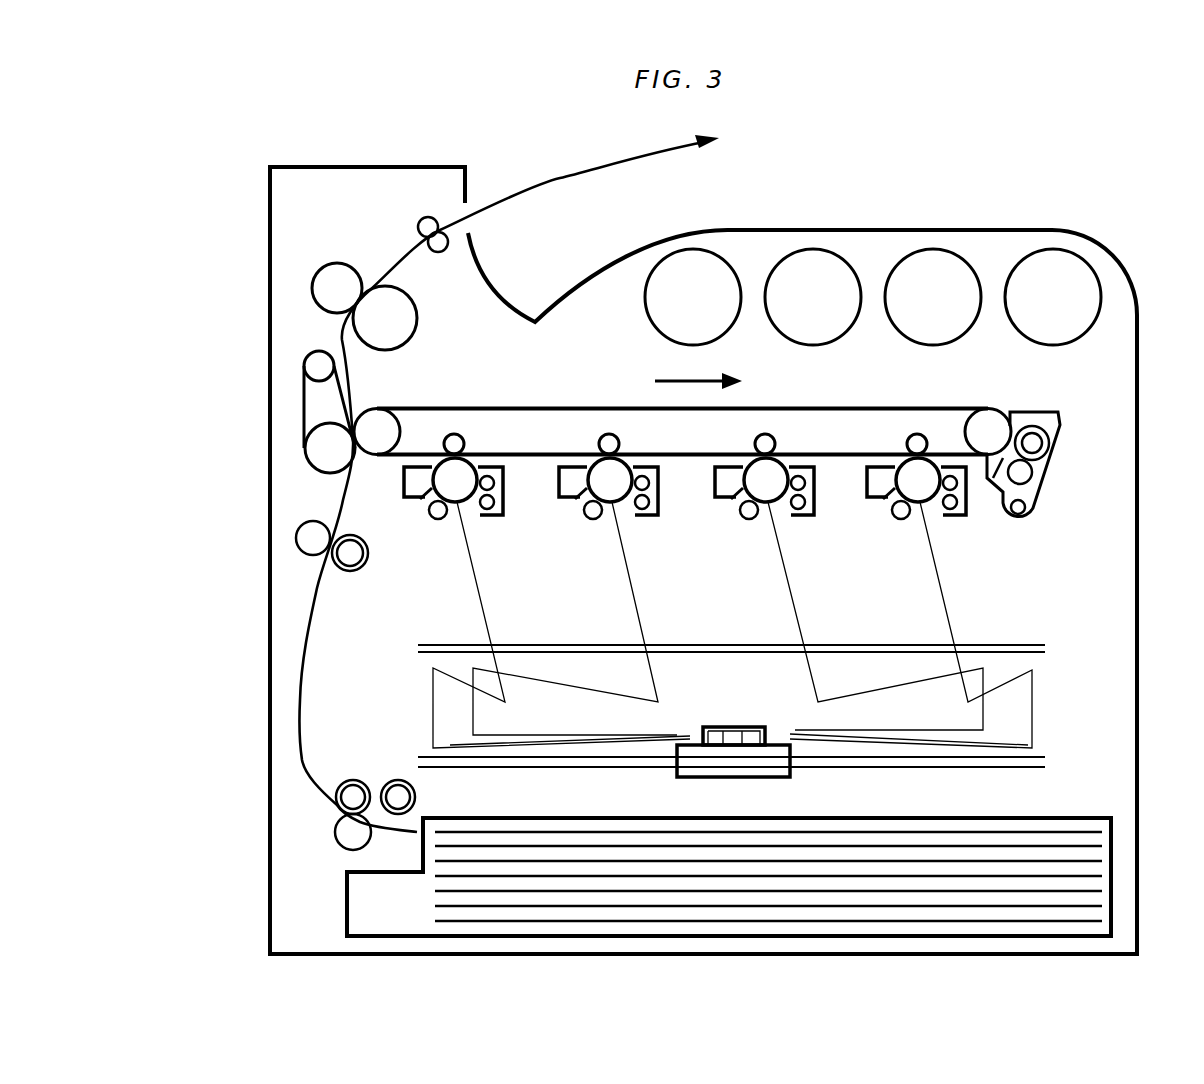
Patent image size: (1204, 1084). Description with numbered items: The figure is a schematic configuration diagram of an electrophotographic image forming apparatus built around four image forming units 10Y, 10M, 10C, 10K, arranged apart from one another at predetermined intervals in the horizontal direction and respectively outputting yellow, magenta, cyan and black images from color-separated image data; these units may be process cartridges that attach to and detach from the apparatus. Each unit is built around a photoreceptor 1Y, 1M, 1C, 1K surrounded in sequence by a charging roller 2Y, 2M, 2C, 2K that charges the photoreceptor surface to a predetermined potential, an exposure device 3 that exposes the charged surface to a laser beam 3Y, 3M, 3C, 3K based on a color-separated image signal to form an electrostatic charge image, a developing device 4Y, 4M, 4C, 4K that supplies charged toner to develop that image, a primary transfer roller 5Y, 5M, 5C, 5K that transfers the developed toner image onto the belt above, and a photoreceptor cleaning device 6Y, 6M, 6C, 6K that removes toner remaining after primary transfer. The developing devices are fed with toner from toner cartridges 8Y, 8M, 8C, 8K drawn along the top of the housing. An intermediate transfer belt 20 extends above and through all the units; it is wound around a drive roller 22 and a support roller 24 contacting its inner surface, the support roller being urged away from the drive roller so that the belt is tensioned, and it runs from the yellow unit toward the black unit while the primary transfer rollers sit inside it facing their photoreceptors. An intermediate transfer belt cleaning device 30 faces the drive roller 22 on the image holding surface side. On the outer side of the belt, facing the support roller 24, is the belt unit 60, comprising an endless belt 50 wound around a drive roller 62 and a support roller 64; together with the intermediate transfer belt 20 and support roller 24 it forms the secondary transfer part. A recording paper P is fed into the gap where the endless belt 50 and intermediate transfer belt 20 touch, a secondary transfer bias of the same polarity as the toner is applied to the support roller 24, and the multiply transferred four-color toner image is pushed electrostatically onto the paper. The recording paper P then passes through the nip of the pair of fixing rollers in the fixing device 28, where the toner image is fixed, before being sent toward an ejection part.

The fixing device 28 is at (400, 289).
The belt unit 60 is at (258, 412).
The support roller 64 is at (312, 365).
The endless belt 50 is at (304, 405).
The drive roller 62 is at (315, 455).
The support roller 24 is at (378, 422).
The intermediate transfer belt 20 is at (845, 407).
The drive roller 22 is at (988, 410).
The intermediate transfer belt cleaning device 30 is at (1060, 422).
The toner cartridge 8K is at (692, 272).
The toner cartridge 8C is at (812, 272).
The toner cartridge 8M is at (932, 272).
The toner cartridge 8Y is at (1052, 272).
The primary transfer roller 5K is at (463, 441).
The primary transfer roller 5C is at (618, 441).
The primary transfer roller 5M is at (774, 441).
The primary transfer roller 5Y is at (925, 440).
The image forming unit 10K is at (462, 550).
The image forming unit 10C is at (617, 550).
The image forming unit 10M is at (773, 550).
The image forming unit 10Y is at (925, 550).
The photoreceptor 1K is at (470, 501).
The photoreceptor 1C is at (625, 501).
The photoreceptor 1M is at (781, 501).
The photoreceptor 1Y is at (933, 501).
The charging roller 2K is at (443, 534).
The charging roller 2C is at (597, 534).
The charging roller 2M is at (753, 534).
The charging roller 2Y is at (906, 534).
The developing device 4K is at (498, 516).
The developing device 4C is at (653, 516).
The developing device 4M is at (809, 516).
The developing device 4Y is at (961, 516).
The photoreceptor cleaning device 6K is at (404, 489).
The photoreceptor cleaning device 6C is at (559, 489).
The photoreceptor cleaning device 6M is at (715, 489).
The photoreceptor cleaning device 6Y is at (867, 489).
The laser beam 3K is at (433, 707).
The laser beam 3C is at (540, 680).
The laser beam 3M is at (872, 692).
The laser beam 3Y is at (1033, 702).
The exposure device 3 is at (795, 775).
The recording paper P is at (1082, 886).